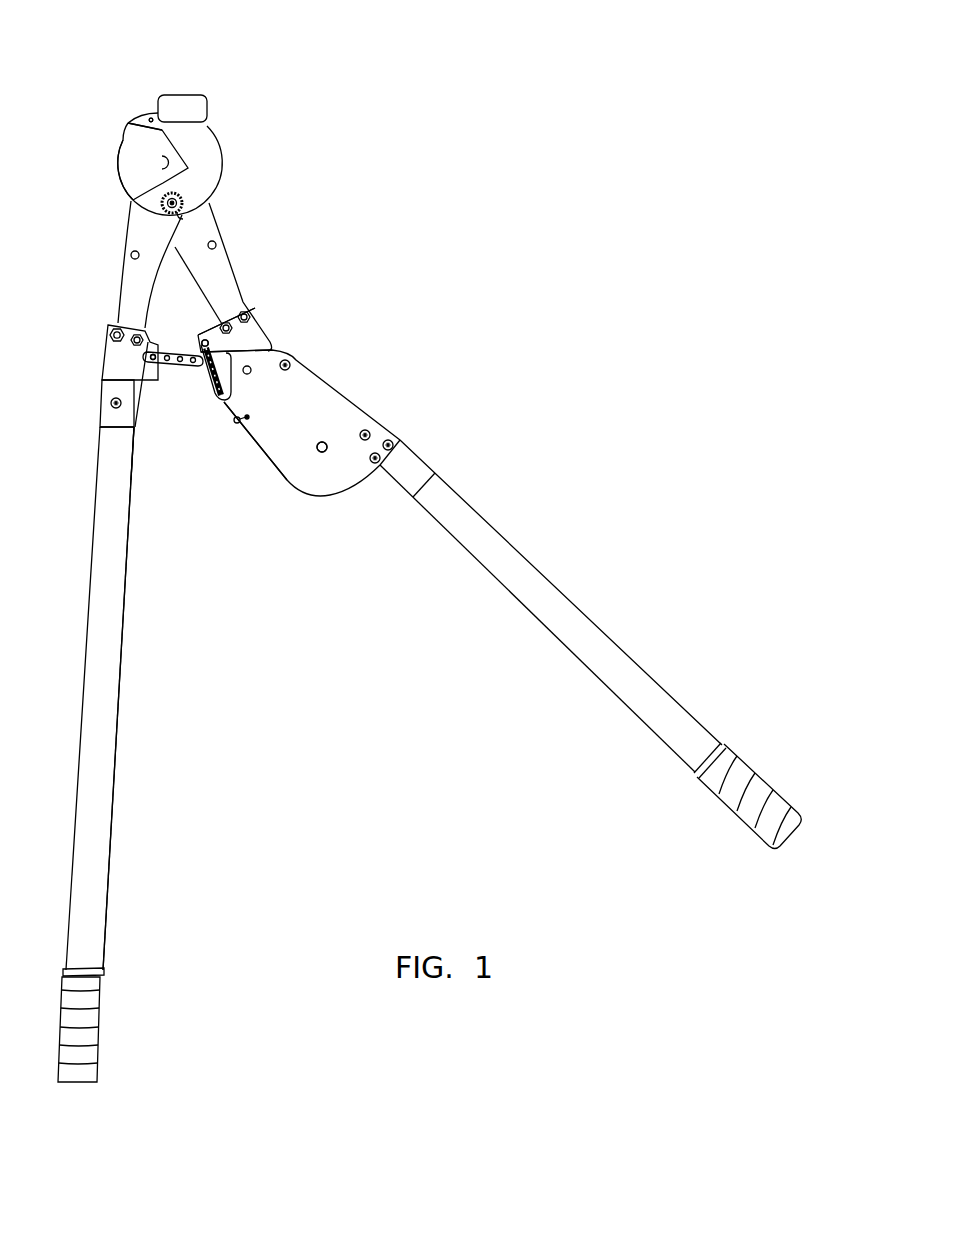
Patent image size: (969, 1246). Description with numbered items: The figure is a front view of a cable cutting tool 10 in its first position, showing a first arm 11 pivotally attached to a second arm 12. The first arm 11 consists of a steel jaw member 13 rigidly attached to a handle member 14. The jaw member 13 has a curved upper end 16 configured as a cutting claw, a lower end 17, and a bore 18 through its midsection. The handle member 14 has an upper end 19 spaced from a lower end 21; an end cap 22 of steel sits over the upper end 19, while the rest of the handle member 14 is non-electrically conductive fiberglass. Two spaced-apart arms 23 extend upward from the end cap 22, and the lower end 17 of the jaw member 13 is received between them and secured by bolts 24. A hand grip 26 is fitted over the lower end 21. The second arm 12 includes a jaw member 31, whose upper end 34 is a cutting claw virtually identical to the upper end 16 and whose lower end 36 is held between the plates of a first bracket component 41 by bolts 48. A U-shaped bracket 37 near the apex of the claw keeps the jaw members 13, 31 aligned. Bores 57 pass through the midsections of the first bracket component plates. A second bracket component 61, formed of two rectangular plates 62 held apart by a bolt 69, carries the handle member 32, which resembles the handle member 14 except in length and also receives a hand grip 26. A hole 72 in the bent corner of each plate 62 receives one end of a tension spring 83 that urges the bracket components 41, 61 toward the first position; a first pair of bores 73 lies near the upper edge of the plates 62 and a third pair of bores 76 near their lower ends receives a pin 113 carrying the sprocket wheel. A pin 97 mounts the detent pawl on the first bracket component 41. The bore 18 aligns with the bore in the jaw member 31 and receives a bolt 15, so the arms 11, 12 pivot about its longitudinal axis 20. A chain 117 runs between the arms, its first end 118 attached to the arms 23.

The cable cutting tool 10 is at (416, 559).
The first arm 11 is at (120, 640).
The second arm 12 is at (550, 583).
The jaw member 13 is at (133, 272).
The handle member 14 is at (113, 764).
The bolt 15 is at (182, 201).
The curved upper end 16 is at (138, 117).
The lower end 17 is at (128, 322).
The bore 18 is at (183, 219).
The upper end 19 is at (123, 434).
The longitudinal axis 20 is at (182, 203).
The lower end 21 is at (85, 968).
The end cap 22 is at (110, 424).
The arms 23 is at (122, 372).
The bolts 24 is at (134, 343).
The hand grip 26 is at (80, 1035).
The jaw member 31 is at (218, 270).
The handle member 32 is at (673, 750).
The upper end 34 is at (132, 155).
The lower end 36 is at (238, 306).
The U-shaped bracket 37 is at (182, 102).
The first bracket component 41 is at (205, 336).
The bolts 48 is at (226, 328).
The bores 57 is at (249, 375).
The second bracket component 61 is at (395, 439).
The plates 62 is at (286, 466).
The bolt 69 is at (291, 365).
The hole 72 is at (222, 405).
The first pair of bores 73 is at (238, 424).
The third pair of bores 76 is at (332, 453).
The tension springs 83 is at (208, 357).
The pin 97 is at (257, 372).
The pin 113 is at (324, 452).
The chain 117 is at (180, 364).
The first end 118 is at (151, 363).